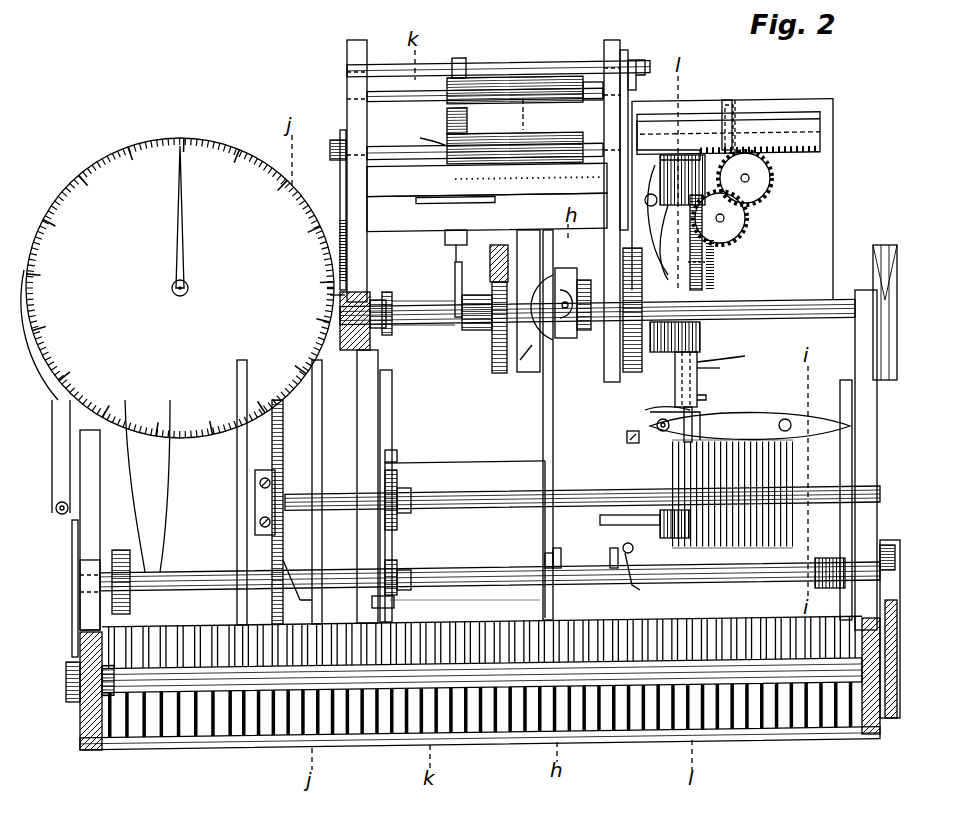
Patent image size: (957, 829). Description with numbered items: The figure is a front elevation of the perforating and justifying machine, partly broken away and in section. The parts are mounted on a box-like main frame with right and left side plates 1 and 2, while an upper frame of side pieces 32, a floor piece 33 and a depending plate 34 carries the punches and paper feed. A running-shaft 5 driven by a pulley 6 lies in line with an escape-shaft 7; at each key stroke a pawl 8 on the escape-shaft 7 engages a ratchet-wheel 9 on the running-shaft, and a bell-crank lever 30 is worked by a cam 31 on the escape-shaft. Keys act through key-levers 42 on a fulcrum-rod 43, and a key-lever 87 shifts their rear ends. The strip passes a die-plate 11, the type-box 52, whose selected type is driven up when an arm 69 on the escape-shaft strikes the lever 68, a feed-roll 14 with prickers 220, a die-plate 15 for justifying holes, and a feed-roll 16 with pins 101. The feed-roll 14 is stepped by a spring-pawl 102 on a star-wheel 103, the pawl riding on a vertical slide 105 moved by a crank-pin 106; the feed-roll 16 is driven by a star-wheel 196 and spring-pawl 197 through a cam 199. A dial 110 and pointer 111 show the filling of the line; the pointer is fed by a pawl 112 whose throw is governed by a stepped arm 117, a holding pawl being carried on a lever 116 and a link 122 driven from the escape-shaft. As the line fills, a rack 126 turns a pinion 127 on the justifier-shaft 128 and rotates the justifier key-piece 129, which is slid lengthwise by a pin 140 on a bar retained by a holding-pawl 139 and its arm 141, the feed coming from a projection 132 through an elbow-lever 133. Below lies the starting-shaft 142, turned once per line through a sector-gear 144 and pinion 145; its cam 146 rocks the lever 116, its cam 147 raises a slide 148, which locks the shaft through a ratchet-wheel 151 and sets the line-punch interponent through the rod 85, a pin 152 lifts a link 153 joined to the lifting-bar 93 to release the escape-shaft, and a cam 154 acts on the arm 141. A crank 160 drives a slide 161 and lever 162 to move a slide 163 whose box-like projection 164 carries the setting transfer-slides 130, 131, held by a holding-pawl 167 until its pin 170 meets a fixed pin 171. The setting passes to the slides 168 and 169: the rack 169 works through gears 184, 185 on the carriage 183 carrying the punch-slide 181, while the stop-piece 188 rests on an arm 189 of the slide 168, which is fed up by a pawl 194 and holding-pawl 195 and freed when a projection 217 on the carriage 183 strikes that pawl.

The right side plate 1 is at (877, 432).
The left side plate 2 is at (84, 606).
The running-shaft 5 is at (795, 305).
The pulley 6 is at (887, 250).
The escape-shaft 7 is at (423, 304).
The pawl 8 is at (560, 340).
The ratchet-wheel 9 is at (582, 282).
The die-plate 11 is at (541, 116).
The feed-roll 14 is at (485, 148).
The die-plate 15 is at (474, 121).
The feed-roll 16 is at (485, 90).
The bell-crank lever 30 is at (503, 248).
The cam 31 is at (484, 327).
The side pieces 32 is at (486, 198).
The base or floor piece 33 is at (487, 212).
The depending plate 34 is at (528, 310).
The key-levers 42 is at (258, 718).
The fulcrum-rod 43 is at (127, 738).
The rectangular case 52 is at (460, 203).
The lever 68 is at (445, 240).
The arm 69 is at (473, 295).
The rod 85 is at (395, 408).
The key-lever 87 is at (72, 661).
The lifting-bar 93 is at (545, 444).
The projecting pins 101 is at (452, 62).
The spring-pawl 102 is at (340, 196).
The star-wheel 103 is at (340, 140).
The vertical slide 105 is at (345, 372).
The crank-pin 106 is at (335, 303).
The dial 110 is at (180, 288).
The pointer 111 is at (186, 218).
The pawl 112 is at (53, 450).
The lever 116 is at (137, 488).
The arm 117 is at (72, 552).
The link 122 is at (388, 292).
The rack 126 is at (272, 425).
The pinion 127 is at (272, 503).
The justifier-shaft 128 is at (884, 496).
The justifier key-piece 129 is at (732, 494).
The setting transfer-slide 130 is at (657, 420).
The setting transfer-slide 131 is at (705, 412).
The projection 132 is at (301, 590).
The elbow-lever 133 is at (394, 603).
The holding-pawl 139 is at (690, 575).
The pin 140 is at (660, 522).
The arm 141 is at (612, 588).
The starting-shaft 142 is at (465, 599).
The sector-gear 144 is at (895, 605).
The pinion 145 is at (890, 550).
The cam 146 is at (120, 550).
The cam 147 is at (395, 566).
The slide 148 is at (397, 458).
The ratchet-wheel 151 is at (411, 495).
The pin 152 is at (562, 565).
The link 153 is at (548, 552).
The cam 154 is at (640, 585).
The crank 160 is at (832, 595).
The slide 161 is at (842, 522).
The lever 162 is at (750, 429).
The vertically-moving slide 163 is at (672, 397).
The box-like projection 164 is at (738, 363).
The holding-pawl 167 is at (660, 445).
The slide 168 is at (700, 270).
The rack 169 is at (695, 255).
The pin 170 is at (721, 387).
The fixed pin 171 is at (718, 354).
The punch-slide 181 is at (695, 118).
The carriage 183 is at (645, 128).
The gear 184 is at (746, 218).
The gear 185 is at (770, 178).
The variable stop-piece 188 is at (738, 118).
The arm 189 is at (694, 180).
The pawl 194 is at (682, 242).
The holding-pawl 195 is at (683, 242).
The star-wheel 196 is at (640, 72).
The spring-pawl 197 is at (620, 115).
The cam 199 is at (632, 372).
The projection 217 is at (696, 220).
The prickers or needle-points 220 is at (496, 152).